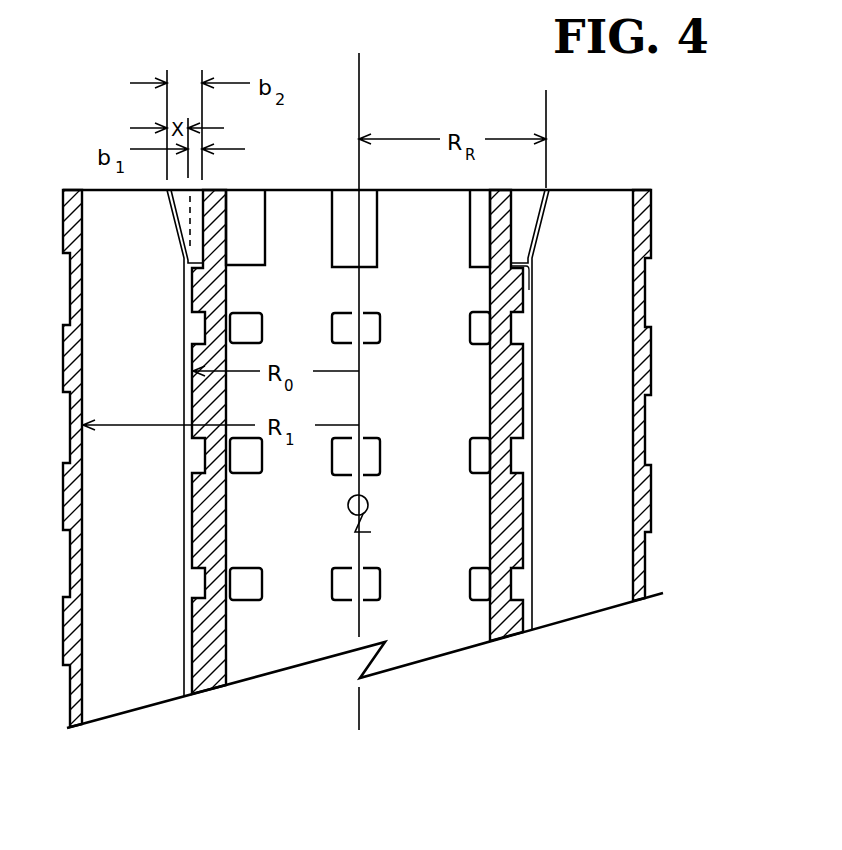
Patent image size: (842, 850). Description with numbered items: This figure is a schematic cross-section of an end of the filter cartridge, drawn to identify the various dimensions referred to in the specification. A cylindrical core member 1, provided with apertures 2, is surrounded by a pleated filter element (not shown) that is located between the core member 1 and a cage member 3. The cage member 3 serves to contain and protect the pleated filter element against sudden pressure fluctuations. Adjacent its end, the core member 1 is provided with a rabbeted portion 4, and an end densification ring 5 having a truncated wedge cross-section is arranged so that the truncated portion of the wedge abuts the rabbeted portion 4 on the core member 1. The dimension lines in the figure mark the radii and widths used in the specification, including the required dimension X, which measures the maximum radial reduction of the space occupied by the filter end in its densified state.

The core member 1 is at (510, 515).
The apertures 2 is at (372, 455).
The cage member 3 is at (647, 362).
The rabbeted portion 4 is at (520, 285).
The end densification ring 5 is at (530, 222).